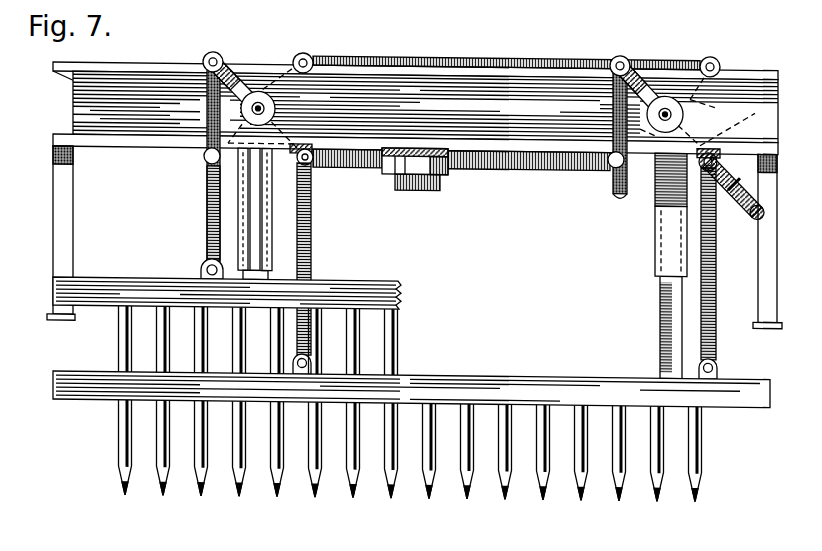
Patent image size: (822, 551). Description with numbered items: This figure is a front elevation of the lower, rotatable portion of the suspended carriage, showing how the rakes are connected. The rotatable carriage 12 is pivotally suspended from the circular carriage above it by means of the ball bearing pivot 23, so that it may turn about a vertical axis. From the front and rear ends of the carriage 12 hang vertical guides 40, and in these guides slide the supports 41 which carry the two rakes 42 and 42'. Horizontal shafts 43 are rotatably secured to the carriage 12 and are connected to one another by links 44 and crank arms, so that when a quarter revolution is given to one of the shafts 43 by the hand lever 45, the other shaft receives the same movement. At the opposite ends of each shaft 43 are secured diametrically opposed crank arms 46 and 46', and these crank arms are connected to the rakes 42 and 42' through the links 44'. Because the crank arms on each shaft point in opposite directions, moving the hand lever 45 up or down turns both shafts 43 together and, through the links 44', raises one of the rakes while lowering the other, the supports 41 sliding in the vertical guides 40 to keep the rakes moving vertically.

The rotatable carriage 12 is at (414, 195).
The ball bearing pivot 23 is at (434, 186).
The vertical guides 40 is at (273, 226).
The supports 41 is at (257, 200).
The rake 42 is at (242, 278).
The rake 42' is at (411, 386).
The horizontal shafts 43 is at (259, 92).
The links 44 is at (506, 119).
The links 44' is at (431, 219).
The hand lever 45 is at (750, 204).
The crank arm 46 is at (396, 103).
The crank arm 46' is at (488, 154).